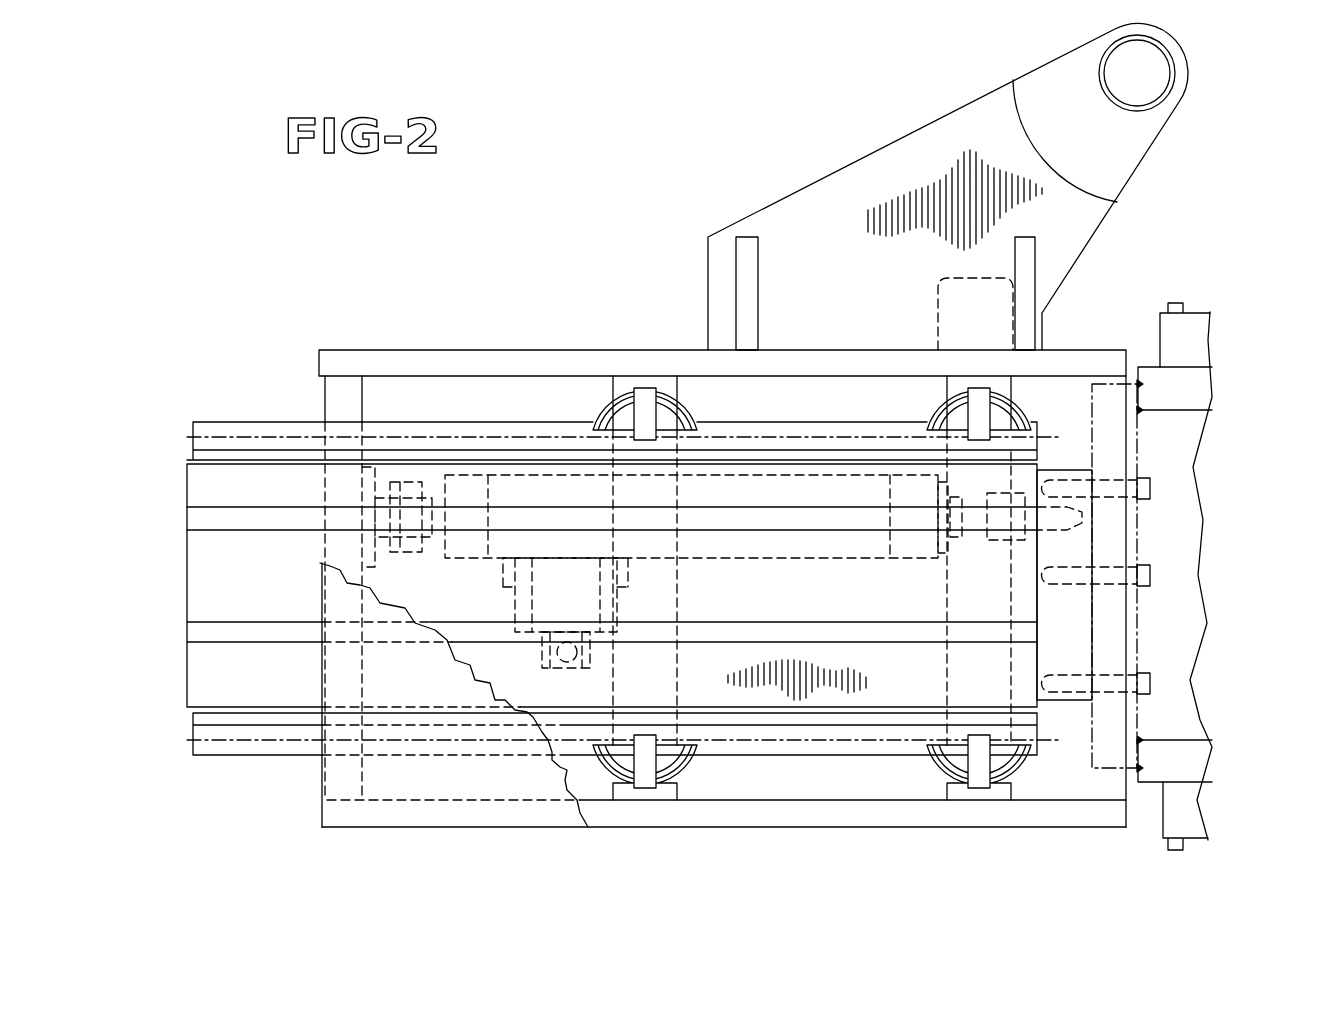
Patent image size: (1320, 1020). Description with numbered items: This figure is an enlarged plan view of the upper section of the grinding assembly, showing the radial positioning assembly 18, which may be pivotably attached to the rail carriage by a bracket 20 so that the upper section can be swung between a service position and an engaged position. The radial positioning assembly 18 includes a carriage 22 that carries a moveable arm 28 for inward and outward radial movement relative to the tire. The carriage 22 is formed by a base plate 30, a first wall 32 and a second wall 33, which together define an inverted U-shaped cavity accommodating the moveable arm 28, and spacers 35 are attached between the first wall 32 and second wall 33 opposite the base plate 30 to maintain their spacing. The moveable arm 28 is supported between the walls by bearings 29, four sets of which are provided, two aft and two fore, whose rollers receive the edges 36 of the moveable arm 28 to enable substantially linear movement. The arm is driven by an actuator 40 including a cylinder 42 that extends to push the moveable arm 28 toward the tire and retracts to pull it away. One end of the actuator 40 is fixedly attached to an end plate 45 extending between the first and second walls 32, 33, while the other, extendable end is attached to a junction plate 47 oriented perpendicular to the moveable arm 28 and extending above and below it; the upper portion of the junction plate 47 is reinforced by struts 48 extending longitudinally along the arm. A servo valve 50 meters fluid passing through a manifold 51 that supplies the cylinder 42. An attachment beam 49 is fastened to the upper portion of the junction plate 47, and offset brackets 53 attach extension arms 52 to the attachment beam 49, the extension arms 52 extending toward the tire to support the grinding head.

The radial positioning assembly 18 is at (222, 393).
The bracket 20 is at (854, 192).
The carriage 22 is at (517, 828).
The moveable arm 28 is at (228, 580).
The bearings 29 is at (598, 405).
The base plate 30 is at (430, 777).
The first wall 32 is at (444, 362).
The second wall 33 is at (766, 815).
The spacers 35 is at (677, 495).
The edges 36 is at (283, 422).
The actuator 40 is at (534, 490).
The cylinder 42 is at (788, 495).
The end plate 45 is at (372, 392).
The junction plate 47 is at (1075, 557).
The struts 48 is at (220, 513).
The attachment beam 49 is at (1112, 527).
The servo valve 50 is at (565, 652).
The manifold 51 is at (510, 572).
The extension arms 52 is at (1185, 338).
The offset brackets 53 is at (1185, 382).